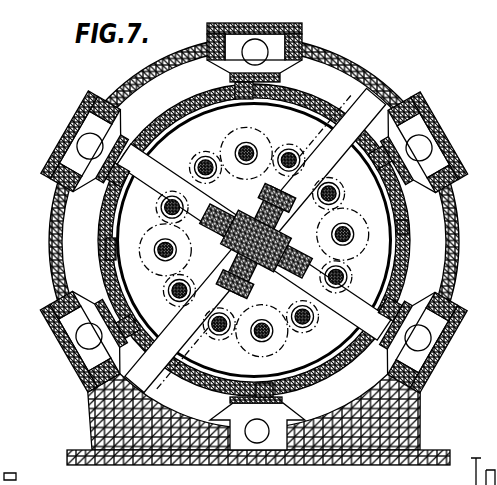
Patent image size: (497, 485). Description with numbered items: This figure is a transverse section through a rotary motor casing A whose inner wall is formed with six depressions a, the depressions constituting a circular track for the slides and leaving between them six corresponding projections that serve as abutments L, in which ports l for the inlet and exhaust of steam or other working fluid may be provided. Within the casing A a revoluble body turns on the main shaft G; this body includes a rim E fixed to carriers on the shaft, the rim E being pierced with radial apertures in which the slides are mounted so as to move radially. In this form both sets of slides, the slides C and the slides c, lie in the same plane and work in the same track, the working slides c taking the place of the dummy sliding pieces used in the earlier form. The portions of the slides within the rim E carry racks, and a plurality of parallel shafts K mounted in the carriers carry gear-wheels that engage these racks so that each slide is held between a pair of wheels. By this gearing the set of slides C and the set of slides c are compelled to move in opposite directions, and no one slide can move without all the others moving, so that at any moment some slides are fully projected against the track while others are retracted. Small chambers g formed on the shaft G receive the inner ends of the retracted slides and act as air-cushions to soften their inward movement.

The casing A is at (53, 272).
The depression a is at (254, 227).
The rim E is at (98, 231).
The slide C is at (368, 106).
The slide c is at (166, 158).
The abutment L is at (66, 150).
The port l is at (253, 242).
The shaft K is at (240, 148).
The main shaft G is at (240, 243).
The chamber g is at (273, 222).